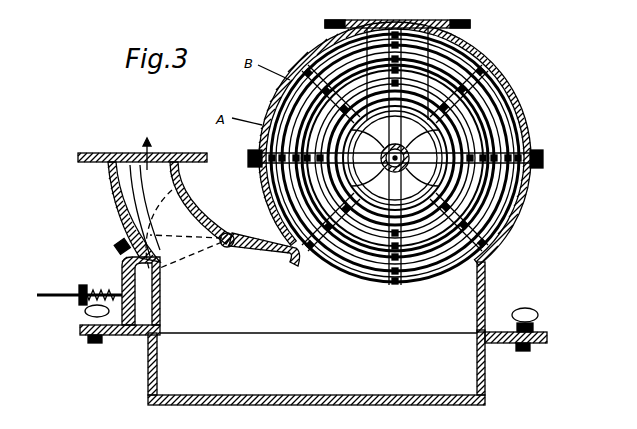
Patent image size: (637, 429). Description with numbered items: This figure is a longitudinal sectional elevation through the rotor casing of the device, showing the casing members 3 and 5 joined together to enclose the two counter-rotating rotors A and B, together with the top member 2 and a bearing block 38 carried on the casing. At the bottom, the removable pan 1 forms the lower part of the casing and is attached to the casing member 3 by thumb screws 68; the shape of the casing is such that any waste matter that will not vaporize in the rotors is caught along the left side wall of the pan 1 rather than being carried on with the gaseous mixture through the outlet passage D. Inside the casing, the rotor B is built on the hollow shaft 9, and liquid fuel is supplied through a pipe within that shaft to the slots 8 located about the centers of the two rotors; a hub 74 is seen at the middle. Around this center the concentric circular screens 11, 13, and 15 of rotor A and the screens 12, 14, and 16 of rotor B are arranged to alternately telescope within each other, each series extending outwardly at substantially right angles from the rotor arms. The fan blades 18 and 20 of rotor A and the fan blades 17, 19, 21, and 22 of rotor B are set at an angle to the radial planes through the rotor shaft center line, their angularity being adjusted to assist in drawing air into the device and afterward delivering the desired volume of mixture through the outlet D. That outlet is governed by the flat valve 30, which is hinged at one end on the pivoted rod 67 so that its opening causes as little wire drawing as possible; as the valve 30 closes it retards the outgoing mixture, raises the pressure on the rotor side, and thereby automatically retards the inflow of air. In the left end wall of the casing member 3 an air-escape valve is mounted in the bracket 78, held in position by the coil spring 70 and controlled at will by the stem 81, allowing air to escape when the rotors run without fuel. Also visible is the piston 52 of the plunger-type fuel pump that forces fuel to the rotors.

The removable pan 1 is at (486, 383).
The top bar 2 is at (458, 28).
The casing member 3 is at (486, 293).
The casing member 5 is at (272, 101).
The slots 8 is at (386, 172).
The shaft 9 is at (404, 170).
The circular screen 11 is at (479, 262).
The circular screen 12 is at (484, 247).
The circular screen 13 is at (487, 233).
The circular screen 14 is at (490, 218).
The circular screen 15 is at (493, 203).
The circular screen 16 is at (496, 186).
The fan blade 17 is at (486, 140).
The fan blade 18 is at (489, 128).
The fan blade 19 is at (492, 116).
The fan blade 20 is at (493, 102).
The fan blade 21 is at (491, 88).
The fan blade 22 is at (485, 73).
The valve 30 is at (200, 217).
The bearing block 38 is at (532, 168).
The piston 52 is at (162, 302).
The pivoted rod 67 is at (236, 238).
The thumb screws 68 is at (90, 313).
The coil spring 70 is at (108, 290).
The hub 74 is at (399, 146).
The bracket 78 is at (120, 252).
The stem 81 is at (75, 303).